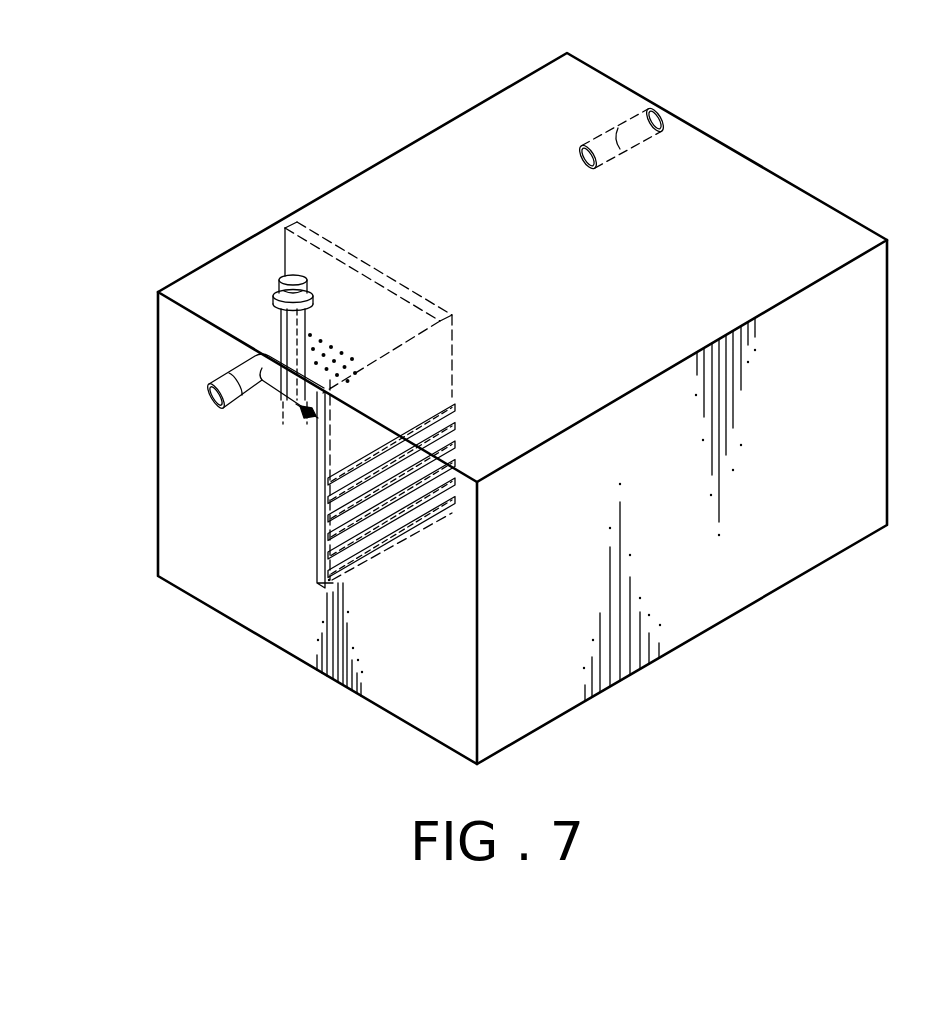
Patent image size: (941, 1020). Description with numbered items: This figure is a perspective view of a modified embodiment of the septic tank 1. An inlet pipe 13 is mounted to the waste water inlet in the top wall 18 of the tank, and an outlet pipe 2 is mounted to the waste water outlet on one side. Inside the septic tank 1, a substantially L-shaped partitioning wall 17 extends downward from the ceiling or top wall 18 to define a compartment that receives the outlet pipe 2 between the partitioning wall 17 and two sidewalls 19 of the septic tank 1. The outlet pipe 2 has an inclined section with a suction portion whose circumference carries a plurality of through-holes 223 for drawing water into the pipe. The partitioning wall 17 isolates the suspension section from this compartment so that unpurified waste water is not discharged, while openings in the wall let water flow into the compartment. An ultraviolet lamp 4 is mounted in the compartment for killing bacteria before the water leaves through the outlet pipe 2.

The septic tank 1 is at (157, 375).
The outlet pipe 2 is at (227, 411).
The ultraviolet lamp 4 is at (288, 275).
The inlet pipe 13 is at (650, 107).
The partitioning wall 17 is at (349, 255).
The top wall 18 is at (228, 277).
The sidewalls 19 is at (217, 535).
The through-holes 223 is at (300, 423).